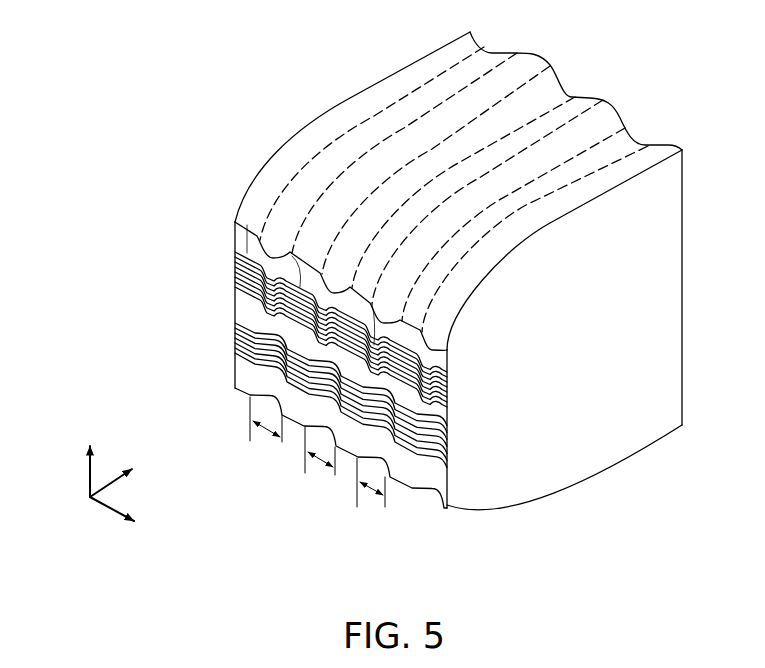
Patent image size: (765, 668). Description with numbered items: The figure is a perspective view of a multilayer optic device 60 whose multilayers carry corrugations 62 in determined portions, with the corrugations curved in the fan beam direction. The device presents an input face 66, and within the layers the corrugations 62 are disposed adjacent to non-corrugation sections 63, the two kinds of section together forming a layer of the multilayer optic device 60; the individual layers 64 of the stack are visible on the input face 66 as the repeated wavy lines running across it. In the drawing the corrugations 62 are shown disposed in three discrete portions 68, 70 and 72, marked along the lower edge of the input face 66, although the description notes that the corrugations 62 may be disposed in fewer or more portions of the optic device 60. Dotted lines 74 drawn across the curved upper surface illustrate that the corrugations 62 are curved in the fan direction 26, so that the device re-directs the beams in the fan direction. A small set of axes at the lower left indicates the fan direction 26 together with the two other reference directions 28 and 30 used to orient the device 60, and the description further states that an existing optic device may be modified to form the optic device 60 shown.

The multilayer optic device 60 is at (238, 62).
The corrugations 62 is at (320, 312).
The non-corrugation sections 63 is at (292, 256).
The layers 64 is at (445, 415).
The input face 66 is at (242, 313).
The first discrete portion 68 is at (267, 427).
The second discrete portion 70 is at (320, 458).
The third discrete portion 72 is at (372, 488).
The dotted lines 74 is at (477, 70).
The fan direction 26 is at (101, 515).
The second direction axis 28 is at (110, 473).
The third direction axis 30 is at (88, 470).